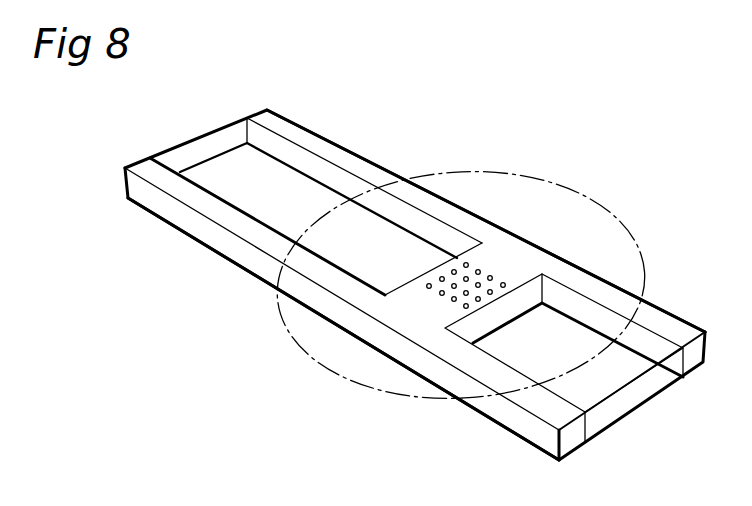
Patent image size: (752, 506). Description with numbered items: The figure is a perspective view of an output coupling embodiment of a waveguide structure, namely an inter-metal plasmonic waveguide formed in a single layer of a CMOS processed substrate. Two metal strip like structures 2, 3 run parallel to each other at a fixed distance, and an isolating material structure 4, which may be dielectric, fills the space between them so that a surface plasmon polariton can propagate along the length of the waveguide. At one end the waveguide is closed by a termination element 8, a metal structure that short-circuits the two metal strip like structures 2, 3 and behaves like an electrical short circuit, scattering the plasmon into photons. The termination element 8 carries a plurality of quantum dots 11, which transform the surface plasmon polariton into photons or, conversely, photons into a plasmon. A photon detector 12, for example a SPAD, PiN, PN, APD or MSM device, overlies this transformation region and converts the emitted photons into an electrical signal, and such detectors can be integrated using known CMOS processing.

The metal strip like structure 2 is at (216, 208).
The metal strip like structure 3 is at (323, 147).
The isolating material structure 4 is at (230, 167).
The termination element 8 is at (525, 300).
The quantum dots 11 is at (480, 270).
The photon detector 12 is at (563, 204).